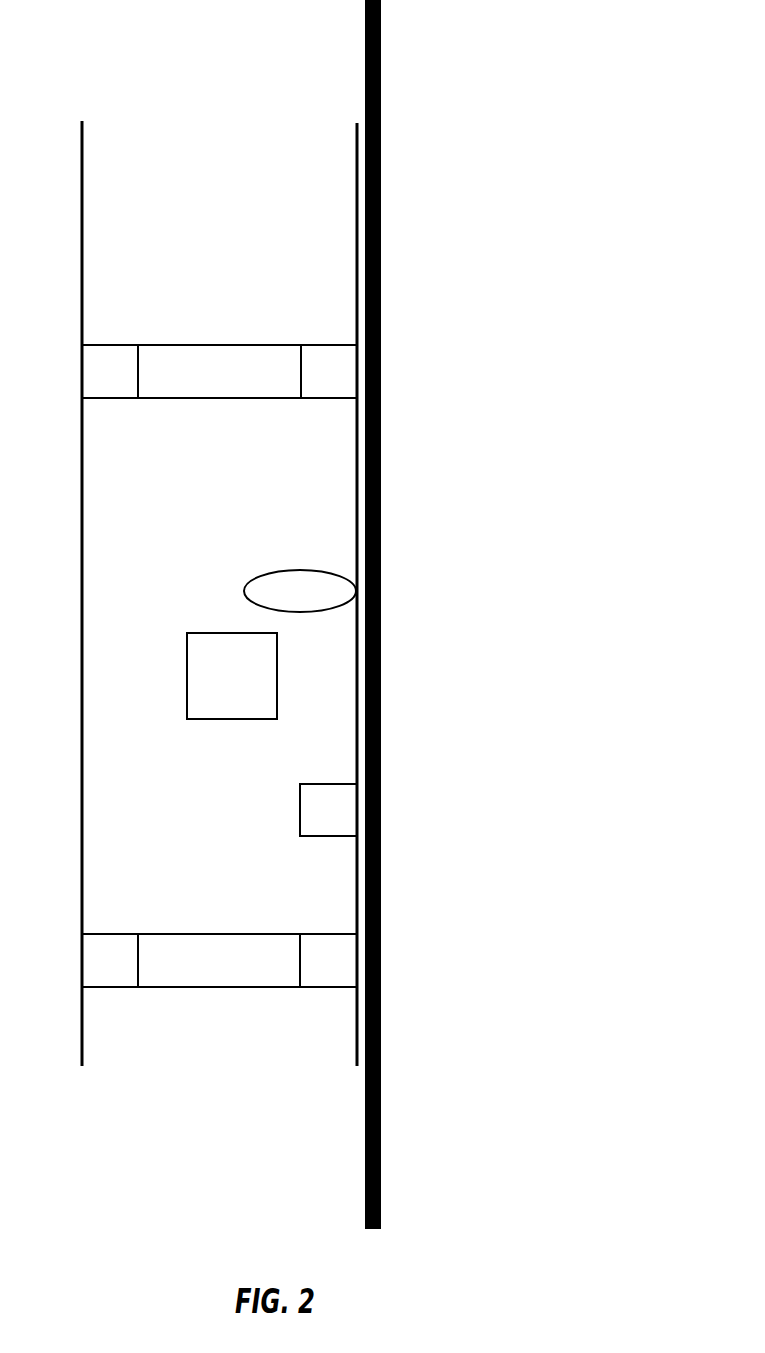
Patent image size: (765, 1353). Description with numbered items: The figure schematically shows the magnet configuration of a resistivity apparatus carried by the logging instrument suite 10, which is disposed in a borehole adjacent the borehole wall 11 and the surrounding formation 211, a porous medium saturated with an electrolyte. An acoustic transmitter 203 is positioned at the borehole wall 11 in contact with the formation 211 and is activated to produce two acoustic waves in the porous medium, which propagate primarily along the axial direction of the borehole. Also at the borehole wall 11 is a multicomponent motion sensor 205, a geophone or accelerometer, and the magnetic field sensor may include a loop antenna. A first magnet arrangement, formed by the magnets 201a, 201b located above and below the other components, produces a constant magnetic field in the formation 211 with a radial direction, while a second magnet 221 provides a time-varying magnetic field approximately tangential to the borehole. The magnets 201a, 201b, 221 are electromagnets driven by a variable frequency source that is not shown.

The logging instrument suite 10 is at (355, 206).
The borehole wall 11 is at (384, 127).
The first magnet 201a is at (327, 358).
The first magnet 201b is at (326, 947).
The acoustic transmitter 203 is at (300, 810).
The multicomponent motion sensor 205 is at (243, 590).
The second magnet 221 is at (186, 675).
The formation 211 is at (572, 694).